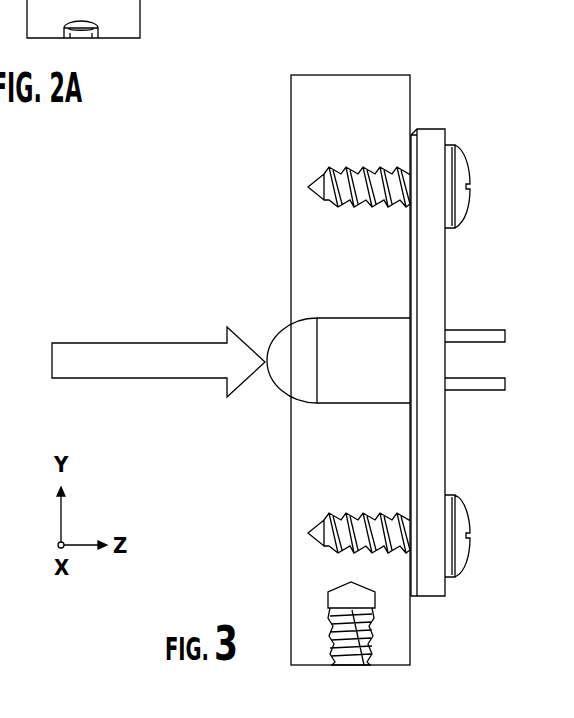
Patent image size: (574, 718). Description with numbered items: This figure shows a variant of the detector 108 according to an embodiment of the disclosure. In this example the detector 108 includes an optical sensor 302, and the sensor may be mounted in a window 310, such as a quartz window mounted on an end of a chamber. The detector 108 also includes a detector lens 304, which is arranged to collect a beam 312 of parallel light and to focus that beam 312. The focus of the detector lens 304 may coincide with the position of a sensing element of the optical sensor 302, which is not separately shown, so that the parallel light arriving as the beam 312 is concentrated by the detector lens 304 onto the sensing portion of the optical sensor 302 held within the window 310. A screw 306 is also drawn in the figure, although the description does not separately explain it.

The detector 108 is at (362, 66).
The optical sensor 302 is at (337, 316).
The detector lens 304 is at (287, 327).
The screw 306 is at (292, 195).
The window 310 is at (328, 85).
The beam 312 is at (128, 342).